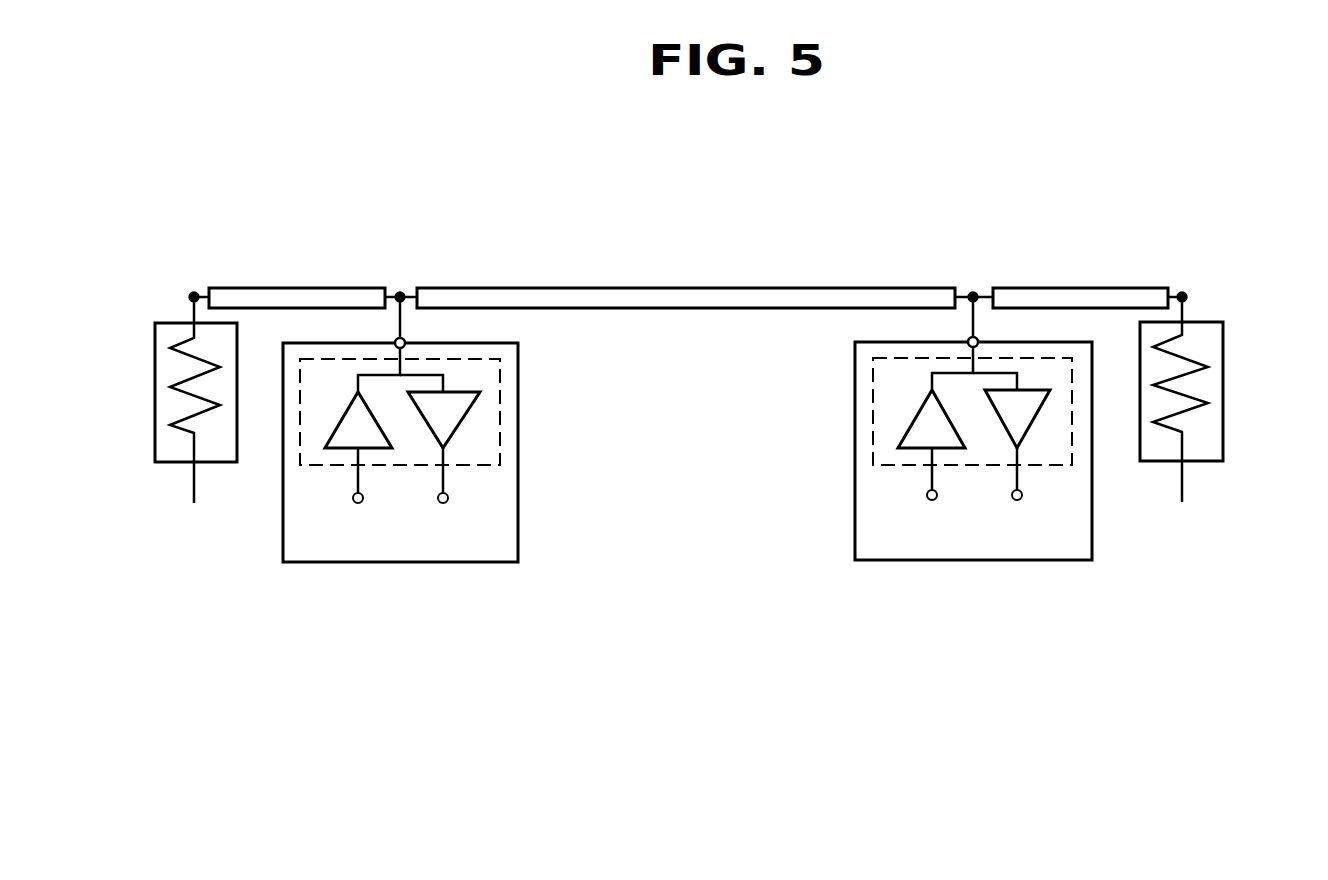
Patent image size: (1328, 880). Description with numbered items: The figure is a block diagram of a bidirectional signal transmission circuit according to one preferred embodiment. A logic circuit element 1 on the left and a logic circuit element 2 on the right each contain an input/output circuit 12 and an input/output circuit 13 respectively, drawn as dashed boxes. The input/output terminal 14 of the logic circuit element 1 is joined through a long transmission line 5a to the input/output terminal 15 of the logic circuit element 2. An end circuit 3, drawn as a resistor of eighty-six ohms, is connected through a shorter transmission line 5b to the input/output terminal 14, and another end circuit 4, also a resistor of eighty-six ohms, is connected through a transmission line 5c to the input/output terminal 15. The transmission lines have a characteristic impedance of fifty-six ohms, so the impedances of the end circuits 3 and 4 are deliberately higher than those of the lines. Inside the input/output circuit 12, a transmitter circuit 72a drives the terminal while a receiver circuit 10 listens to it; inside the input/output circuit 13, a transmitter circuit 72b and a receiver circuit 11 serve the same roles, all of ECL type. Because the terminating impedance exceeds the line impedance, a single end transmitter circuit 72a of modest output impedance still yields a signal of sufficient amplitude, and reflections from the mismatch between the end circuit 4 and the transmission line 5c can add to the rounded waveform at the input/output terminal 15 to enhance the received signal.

The logic circuit element 1 is at (518, 483).
The logic circuit element 2 is at (855, 475).
The end circuit 3 is at (173, 323).
The end circuit 4 is at (1215, 322).
The transmission line 5a is at (705, 282).
The transmission line 5b is at (315, 287).
The transmission line 5c is at (1112, 287).
The receiver circuit 10 is at (455, 417).
The receiver circuit 11 is at (1030, 413).
The input/output circuit 12 is at (502, 400).
The input/output circuit 13 is at (873, 375).
The input/output terminal 14 is at (405, 341).
The input/output terminal 15 is at (978, 340).
The transmitter circuit 72a is at (347, 438).
The transmitter circuit 72b is at (907, 430).